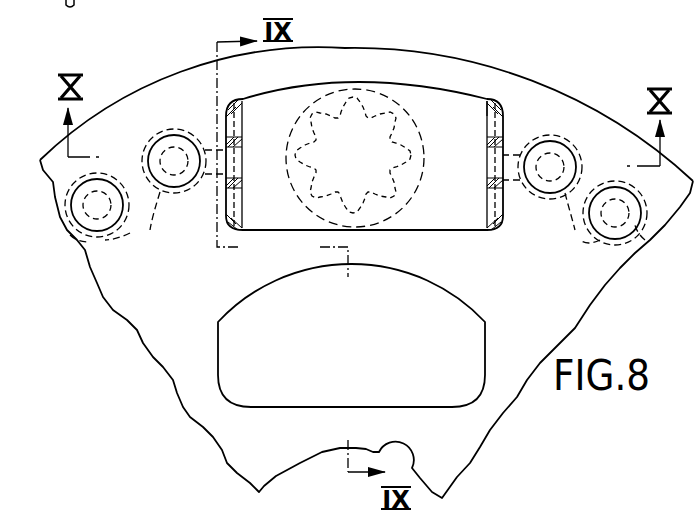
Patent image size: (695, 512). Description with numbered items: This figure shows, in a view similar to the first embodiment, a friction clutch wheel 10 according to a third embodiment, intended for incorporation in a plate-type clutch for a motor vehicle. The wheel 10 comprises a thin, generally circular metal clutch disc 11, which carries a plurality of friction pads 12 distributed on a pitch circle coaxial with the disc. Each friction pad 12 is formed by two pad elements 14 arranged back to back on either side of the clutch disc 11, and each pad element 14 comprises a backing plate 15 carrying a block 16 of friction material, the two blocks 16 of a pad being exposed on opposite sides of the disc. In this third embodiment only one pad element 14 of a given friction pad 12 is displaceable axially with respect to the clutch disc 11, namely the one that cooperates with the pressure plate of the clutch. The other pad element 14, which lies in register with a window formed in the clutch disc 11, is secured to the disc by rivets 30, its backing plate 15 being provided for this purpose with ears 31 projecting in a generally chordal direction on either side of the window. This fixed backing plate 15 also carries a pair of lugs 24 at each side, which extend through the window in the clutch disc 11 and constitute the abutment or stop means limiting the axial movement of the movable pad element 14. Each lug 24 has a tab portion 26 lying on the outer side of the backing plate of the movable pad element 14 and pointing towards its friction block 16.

The friction clutch wheel 10 is at (159, 78).
The clutch disc 11 is at (136, 331).
The friction pad 12 is at (445, 236).
The pad element 14 is at (463, 91).
The backing plate 15 is at (492, 107).
The block of friction material 16 is at (339, 166).
The lug 24 is at (227, 122).
The tab portion 26 is at (242, 131).
The rivet 30 is at (100, 205).
The ear 31 is at (356, 194).